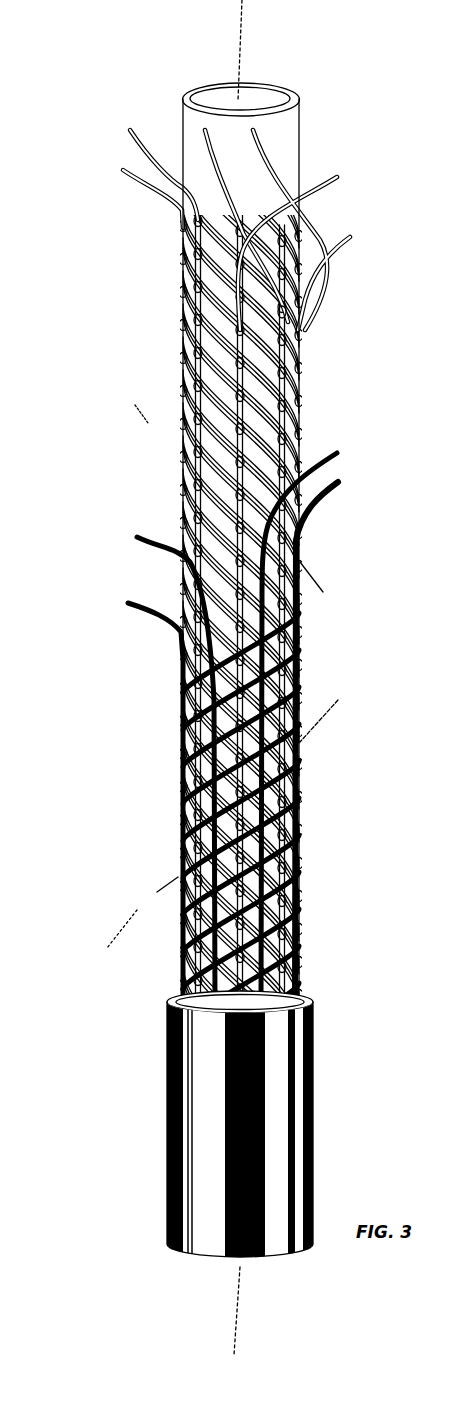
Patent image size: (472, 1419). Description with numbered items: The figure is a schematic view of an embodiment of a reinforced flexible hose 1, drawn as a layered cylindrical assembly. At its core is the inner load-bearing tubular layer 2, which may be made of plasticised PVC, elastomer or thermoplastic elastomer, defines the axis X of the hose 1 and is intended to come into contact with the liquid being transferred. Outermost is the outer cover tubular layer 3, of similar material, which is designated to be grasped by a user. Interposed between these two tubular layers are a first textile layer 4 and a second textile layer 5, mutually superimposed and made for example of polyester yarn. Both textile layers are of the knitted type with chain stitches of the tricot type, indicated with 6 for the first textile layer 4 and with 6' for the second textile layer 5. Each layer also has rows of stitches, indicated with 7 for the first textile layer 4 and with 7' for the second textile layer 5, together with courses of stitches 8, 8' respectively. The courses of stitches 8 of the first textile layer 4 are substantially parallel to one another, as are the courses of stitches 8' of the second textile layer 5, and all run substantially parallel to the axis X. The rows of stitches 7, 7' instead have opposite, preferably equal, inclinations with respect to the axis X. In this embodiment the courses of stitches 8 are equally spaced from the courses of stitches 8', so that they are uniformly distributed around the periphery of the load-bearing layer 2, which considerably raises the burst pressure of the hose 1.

The reinforced flexible hose 1 is at (82, 122).
The inner load-bearing tubular layer 2 is at (277, 143).
The outer cover tubular layer 3 is at (234, 1130).
The first textile layer 4 is at (170, 371).
The second textile layer 5 is at (305, 852).
The chain stitches of the first textile layer 6 is at (286, 234).
The chain stitches of the second textile layer 6' is at (146, 803).
The rows of stitches of the first textile layer 7 is at (159, 229).
The rows of stitches of the second textile layer 7' is at (309, 728).
The courses of stitches of the first textile layer 8 is at (299, 230).
The courses of stitches of the second textile layer 8' is at (210, 1053).
The axis of the hose X is at (243, 1302).